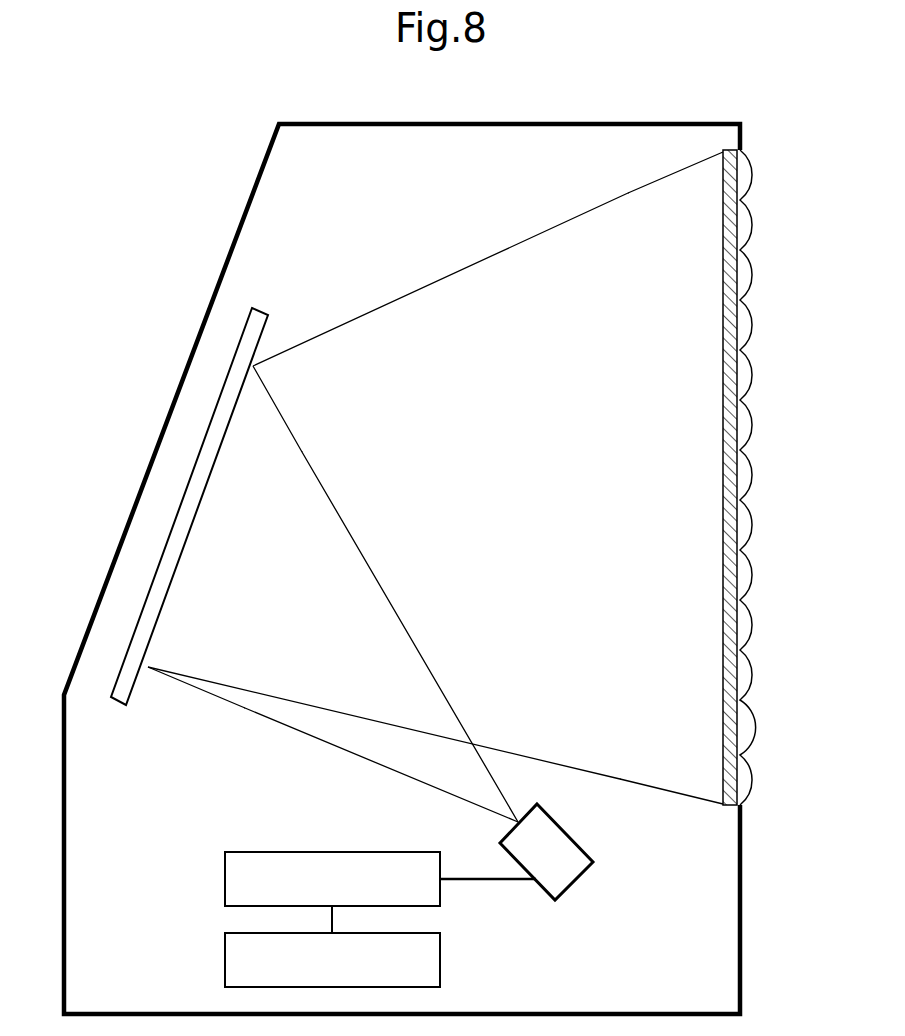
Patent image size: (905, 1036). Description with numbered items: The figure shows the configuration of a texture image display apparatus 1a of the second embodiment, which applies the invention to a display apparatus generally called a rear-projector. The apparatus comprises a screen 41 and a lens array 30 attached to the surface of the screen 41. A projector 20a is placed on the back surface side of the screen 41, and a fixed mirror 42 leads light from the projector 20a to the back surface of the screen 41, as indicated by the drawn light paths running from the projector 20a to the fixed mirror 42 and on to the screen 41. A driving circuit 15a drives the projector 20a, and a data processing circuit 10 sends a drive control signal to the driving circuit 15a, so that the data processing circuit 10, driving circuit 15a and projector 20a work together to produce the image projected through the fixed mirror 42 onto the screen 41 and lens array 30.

The texture image display apparatus 1a is at (242, 177).
The fixed mirror 42 is at (262, 311).
The screen 41 is at (723, 304).
The lens array 30 is at (750, 170).
The projector 20a is at (594, 870).
The driving circuit 15a is at (225, 878).
The data processing circuit 10 is at (225, 962).